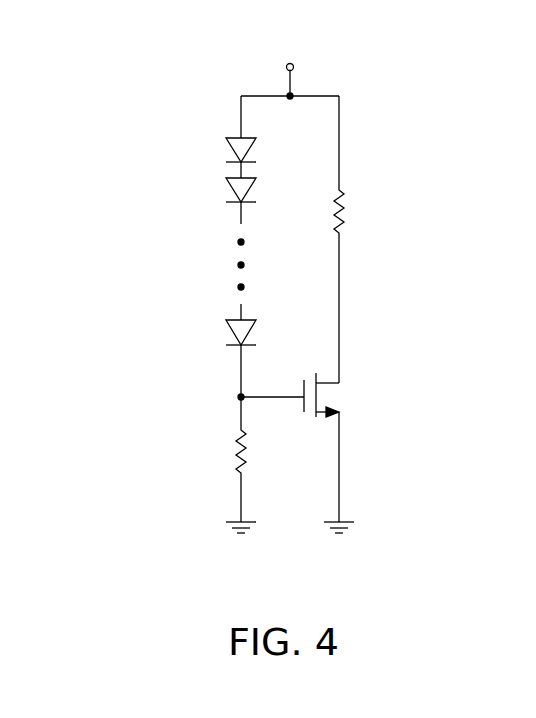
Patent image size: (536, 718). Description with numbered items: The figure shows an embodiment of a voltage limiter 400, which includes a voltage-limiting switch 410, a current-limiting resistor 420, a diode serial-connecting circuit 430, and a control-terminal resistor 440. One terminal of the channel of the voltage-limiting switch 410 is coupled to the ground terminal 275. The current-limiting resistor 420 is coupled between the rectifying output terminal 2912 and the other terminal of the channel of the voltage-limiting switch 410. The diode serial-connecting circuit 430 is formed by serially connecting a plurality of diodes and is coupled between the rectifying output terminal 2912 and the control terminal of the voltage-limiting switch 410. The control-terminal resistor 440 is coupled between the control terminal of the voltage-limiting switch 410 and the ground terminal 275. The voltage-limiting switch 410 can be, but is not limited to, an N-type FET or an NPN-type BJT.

The voltage limiter 400 is at (80, 41).
The rectifying output terminal 2912 is at (290, 63).
The diode serial-connecting circuit 430 is at (218, 131).
The current-limiting resistor 420 is at (348, 204).
The control-terminal resistor 440 is at (232, 450).
The voltage-limiting switch 410 is at (325, 418).
The ground terminal 275 is at (238, 536).